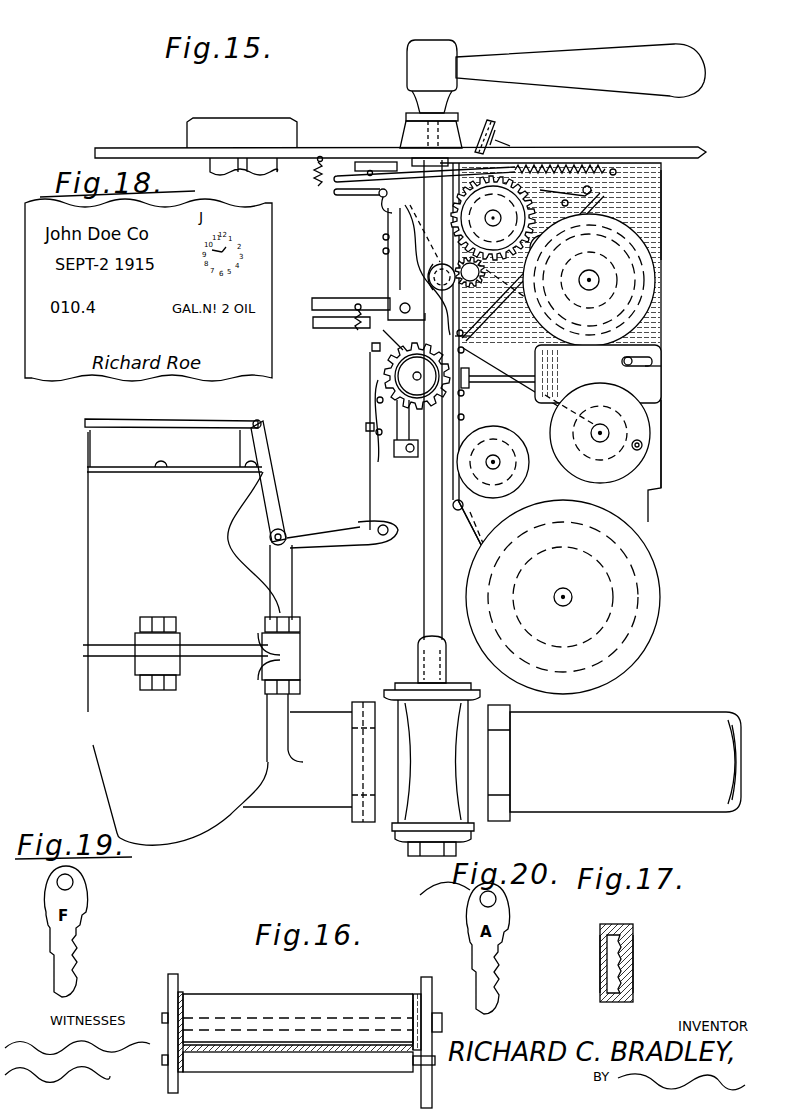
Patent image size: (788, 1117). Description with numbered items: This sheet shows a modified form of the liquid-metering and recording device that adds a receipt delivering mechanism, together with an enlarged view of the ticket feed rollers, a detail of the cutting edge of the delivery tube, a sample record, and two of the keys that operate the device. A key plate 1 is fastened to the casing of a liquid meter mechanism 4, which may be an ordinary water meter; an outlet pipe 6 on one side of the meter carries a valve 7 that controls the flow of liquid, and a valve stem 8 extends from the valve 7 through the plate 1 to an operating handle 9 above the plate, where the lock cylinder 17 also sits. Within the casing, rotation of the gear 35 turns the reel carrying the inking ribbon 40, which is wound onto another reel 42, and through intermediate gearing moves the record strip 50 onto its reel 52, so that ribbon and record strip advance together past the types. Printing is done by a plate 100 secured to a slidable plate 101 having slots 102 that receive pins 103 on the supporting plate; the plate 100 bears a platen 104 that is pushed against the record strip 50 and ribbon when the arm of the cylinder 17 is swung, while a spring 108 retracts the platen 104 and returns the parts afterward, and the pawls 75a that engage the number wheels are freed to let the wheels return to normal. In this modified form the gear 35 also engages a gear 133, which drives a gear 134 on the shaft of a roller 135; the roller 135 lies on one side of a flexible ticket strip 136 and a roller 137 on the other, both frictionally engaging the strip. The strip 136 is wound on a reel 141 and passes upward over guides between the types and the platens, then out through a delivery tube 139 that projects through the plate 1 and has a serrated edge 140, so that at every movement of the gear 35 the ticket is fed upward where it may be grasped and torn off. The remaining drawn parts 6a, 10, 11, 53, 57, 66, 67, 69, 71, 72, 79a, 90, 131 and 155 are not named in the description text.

In FIG. 15, the key plate 1 is at (140, 150).
In FIG. 15, the liquid meter mechanism 4 is at (191, 637).
In FIG. 15, the outlet pipe 6 is at (297, 750).
In FIG. 15, the outlet pipe 6a is at (625, 762).
In FIG. 15, the valve 7 is at (431, 778).
In FIG. 15, the valve stem 8 is at (427, 558).
In FIG. 15, the operating handle 9 is at (616, 62).
In FIG. 15, the cover block 10 is at (242, 133).
In FIG. 15, the bracket 11 is at (255, 170).
In FIG. 15, the cylinder 17 is at (483, 130).
In FIG. 15, the gear 35 is at (522, 185).
In FIG. 15, the inking ribbon 40 is at (470, 336).
In FIG. 15, the reel 42 is at (518, 476).
In FIG. 15, the record strip 50 is at (583, 433).
In FIG. 15, the reel 52 is at (600, 444).
In FIG. 15, the lever 53 is at (337, 330).
In FIG. 15, the frame 57 is at (655, 490).
In FIG. 15, the float arm 66 is at (162, 422).
In FIG. 15, the lever 67 is at (358, 540).
In FIG. 15, the link 69 is at (291, 600).
In FIG. 15, the lever 71 is at (389, 527).
In FIG. 15, the rod 72 is at (372, 480).
In FIG. 15, the pawl 75a is at (372, 398).
In FIG. 15, the ratchet wheel 79a is at (380, 366).
In FIG. 15, the bar 90 is at (340, 311).
In FIG. 15, the plate 100 is at (496, 389).
In FIG. 15, the slidable plate 101 is at (662, 365).
In FIG. 15, the slots 102 is at (648, 355).
In FIG. 15, the pins 103 is at (616, 362).
In FIG. 15, the platen 104 is at (471, 372).
In FIG. 15, the spring 108 is at (655, 426).
In FIG. 15, the idler 131 is at (505, 297).
In FIG. 15, the gear 133 is at (481, 283).
In FIG. 16, the gear 134 is at (418, 992).
In FIG. 15, the roller 135 is at (430, 277).
In FIG. 15, the ticket strip 136 is at (463, 508).
In FIG. 16, the ticket strip 136 is at (386, 1052).
In FIG. 15, the roller 137 is at (656, 224).
In FIG. 16, the roller 137 is at (272, 1062).
In FIG. 15, the delivery tube 139 is at (490, 121).
In FIG. 17, the delivery tube 139 is at (603, 950).
In FIG. 15, the serrated edge 140 is at (497, 127).
In FIG. 17, the serrated edge 140 is at (630, 952).
In FIG. 15, the reel 141 is at (592, 551).
In FIG. 16, the roller 155 is at (236, 996).